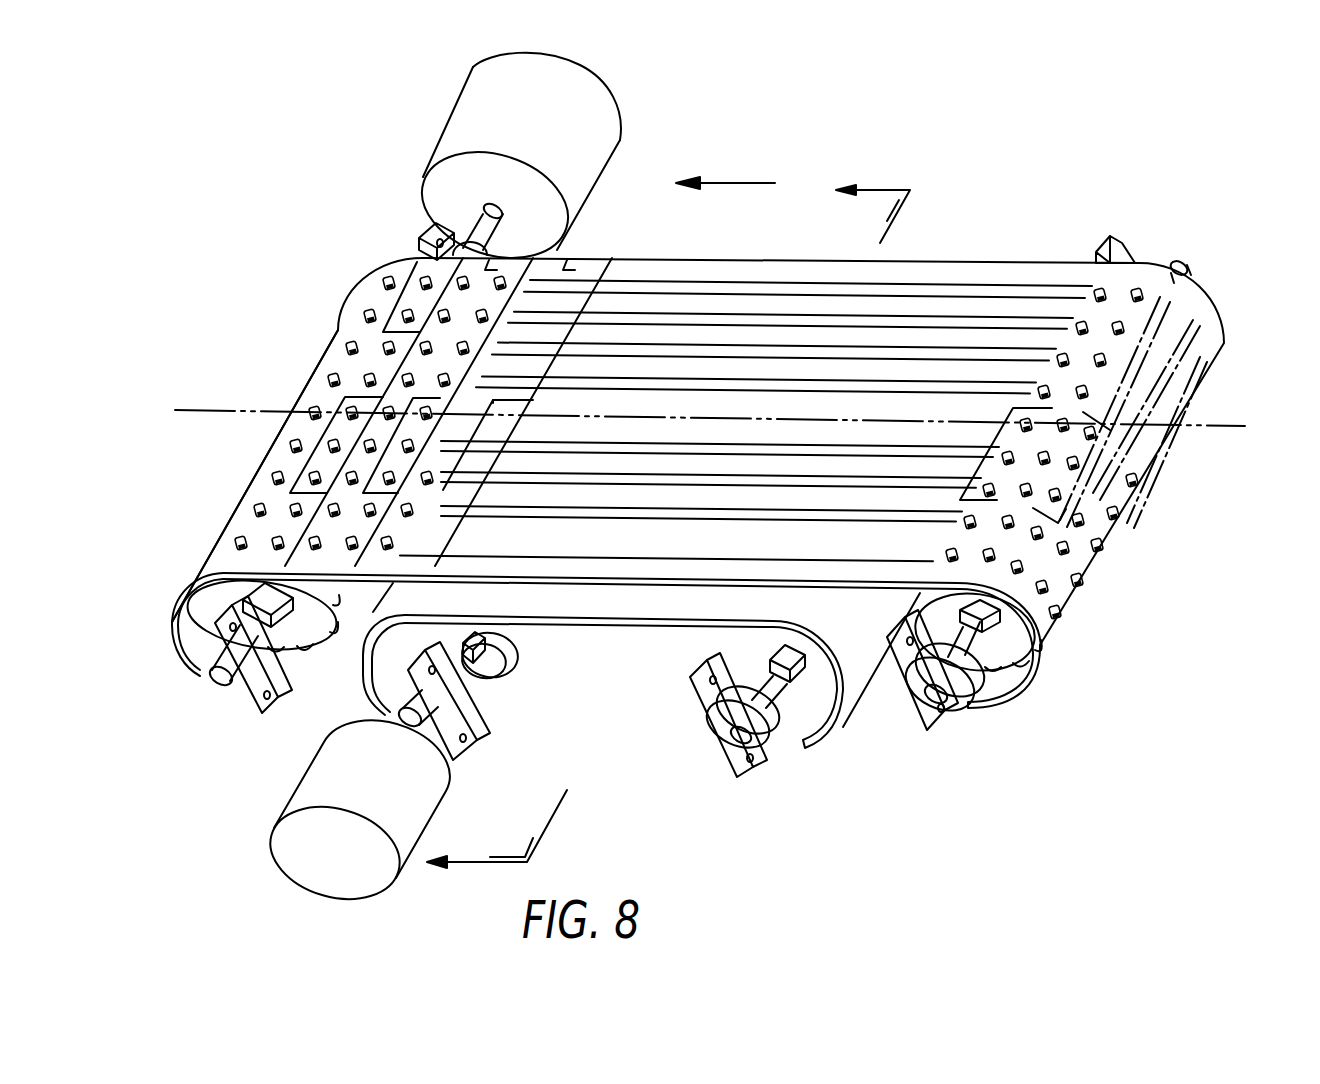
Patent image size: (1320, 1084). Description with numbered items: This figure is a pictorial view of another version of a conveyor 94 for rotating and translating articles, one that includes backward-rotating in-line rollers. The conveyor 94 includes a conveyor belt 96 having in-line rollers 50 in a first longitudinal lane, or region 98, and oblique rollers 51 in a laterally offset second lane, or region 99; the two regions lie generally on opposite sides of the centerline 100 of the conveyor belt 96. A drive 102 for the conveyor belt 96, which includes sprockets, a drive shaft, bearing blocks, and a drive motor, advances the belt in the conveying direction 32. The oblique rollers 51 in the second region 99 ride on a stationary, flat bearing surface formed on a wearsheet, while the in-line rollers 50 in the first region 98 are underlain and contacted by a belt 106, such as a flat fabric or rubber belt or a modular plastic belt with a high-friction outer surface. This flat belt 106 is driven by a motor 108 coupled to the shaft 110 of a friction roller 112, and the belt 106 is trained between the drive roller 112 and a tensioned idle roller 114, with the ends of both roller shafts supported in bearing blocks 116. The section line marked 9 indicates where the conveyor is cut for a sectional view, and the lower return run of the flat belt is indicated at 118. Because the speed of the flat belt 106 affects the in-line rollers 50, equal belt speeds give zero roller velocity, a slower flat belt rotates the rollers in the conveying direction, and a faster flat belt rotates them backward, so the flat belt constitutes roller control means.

The conveyor 94 is at (943, 158).
The conveying direction 32 is at (737, 183).
The section line 9- 9 is at (665, 535).
The conveyor belt 96 is at (1035, 276).
The oblique rollers 51 is at (428, 273).
The second lane, or region 99 is at (360, 287).
The centerline 100 is at (237, 410).
The in-line rollers 50 is at (253, 508).
The first longitudinal lane, or region 98 is at (227, 528).
The drive 102 is at (297, 630).
The lower belt run 118 is at (640, 605).
The bearing blocks 116 is at (472, 720).
The shaft 110 is at (482, 660).
The friction roller 112 is at (515, 637).
The tensioned idle roller 114 is at (740, 643).
The belt 106 is at (853, 670).
The motor 108 is at (417, 808).